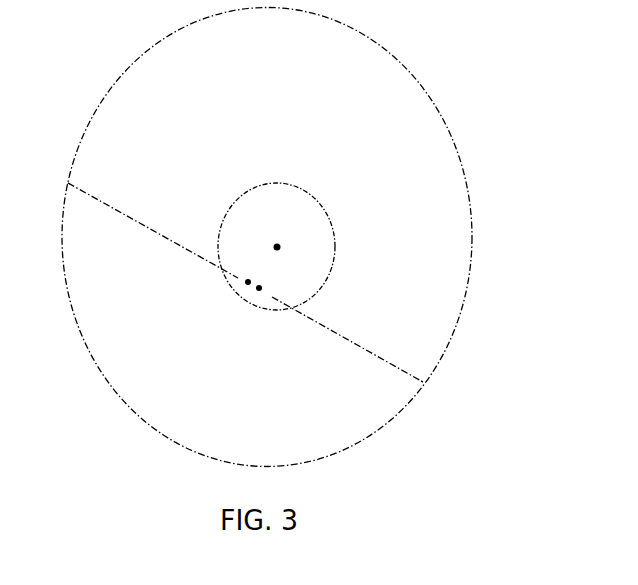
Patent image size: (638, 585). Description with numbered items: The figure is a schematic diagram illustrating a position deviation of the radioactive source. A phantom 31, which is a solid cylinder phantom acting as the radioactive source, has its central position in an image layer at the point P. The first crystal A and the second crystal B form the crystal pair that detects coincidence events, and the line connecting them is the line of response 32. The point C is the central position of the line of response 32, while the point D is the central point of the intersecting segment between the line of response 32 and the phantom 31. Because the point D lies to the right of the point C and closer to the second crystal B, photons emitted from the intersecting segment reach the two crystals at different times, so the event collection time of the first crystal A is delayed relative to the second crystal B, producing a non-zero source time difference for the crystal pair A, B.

The phantom 31 is at (295, 192).
The line of response 32 is at (148, 227).
The central position of the radioactive source P is at (291, 246).
The first crystal A is at (57, 182).
The second crystal B is at (435, 395).
The central position of the LOR C is at (239, 296).
The central point of the intersecting segment D is at (260, 304).